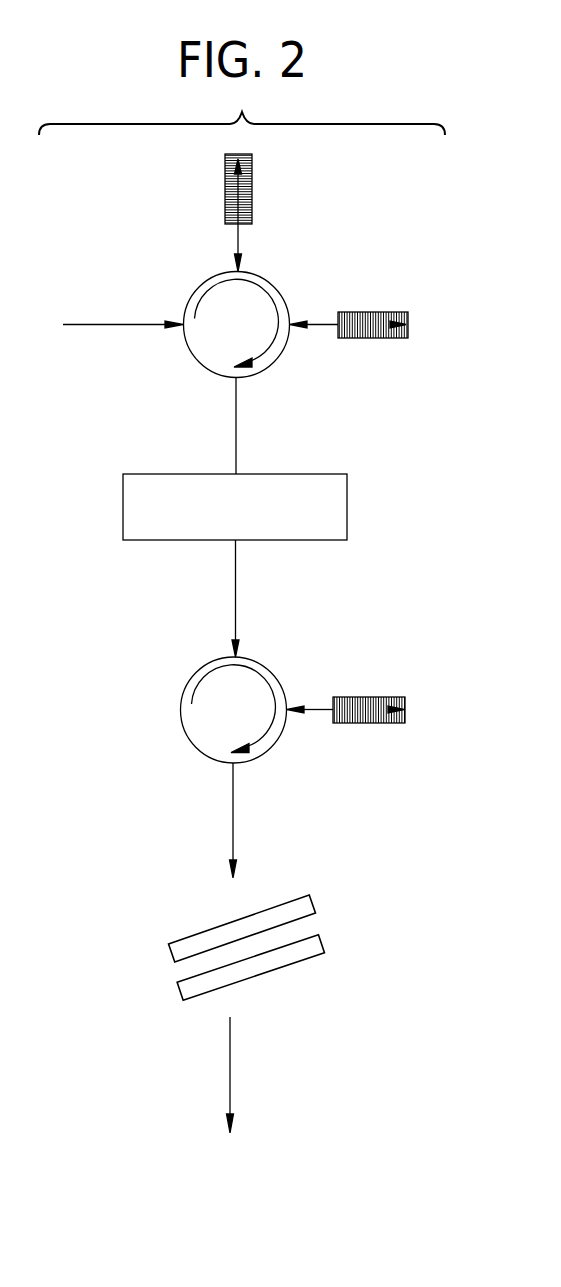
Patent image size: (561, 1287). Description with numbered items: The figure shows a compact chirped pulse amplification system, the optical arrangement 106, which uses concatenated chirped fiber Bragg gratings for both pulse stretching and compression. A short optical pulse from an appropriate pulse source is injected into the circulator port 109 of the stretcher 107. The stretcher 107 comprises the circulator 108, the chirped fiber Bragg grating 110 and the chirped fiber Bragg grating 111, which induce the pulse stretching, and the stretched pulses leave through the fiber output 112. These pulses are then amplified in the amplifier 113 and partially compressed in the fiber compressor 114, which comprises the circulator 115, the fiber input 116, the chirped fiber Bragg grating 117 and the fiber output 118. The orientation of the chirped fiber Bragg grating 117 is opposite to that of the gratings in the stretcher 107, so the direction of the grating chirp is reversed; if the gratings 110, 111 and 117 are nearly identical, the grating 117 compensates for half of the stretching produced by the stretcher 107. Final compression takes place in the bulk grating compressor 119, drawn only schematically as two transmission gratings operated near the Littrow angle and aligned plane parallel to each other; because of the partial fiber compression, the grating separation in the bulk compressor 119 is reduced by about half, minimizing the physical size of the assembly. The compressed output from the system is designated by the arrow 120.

The optical arrangement 106 is at (432, 1087).
The stretcher 107 is at (252, 286).
The circulator 108 is at (273, 283).
The circulator port 109 is at (153, 320).
The chirped fiber Bragg grating 110 is at (224, 182).
The chirped fiber Bragg grating 111 is at (350, 311).
The fiber output of stretcher 112 is at (237, 437).
The amplifier 113 is at (348, 517).
The fiber compressor 114 is at (280, 815).
The circulator 115 is at (273, 670).
The fiber input 116 is at (236, 612).
The chirped fiber Bragg grating 117 is at (345, 696).
The fiber output 118 is at (233, 847).
The bulk grating compressor 119 is at (170, 952).
The output 120 is at (231, 1078).